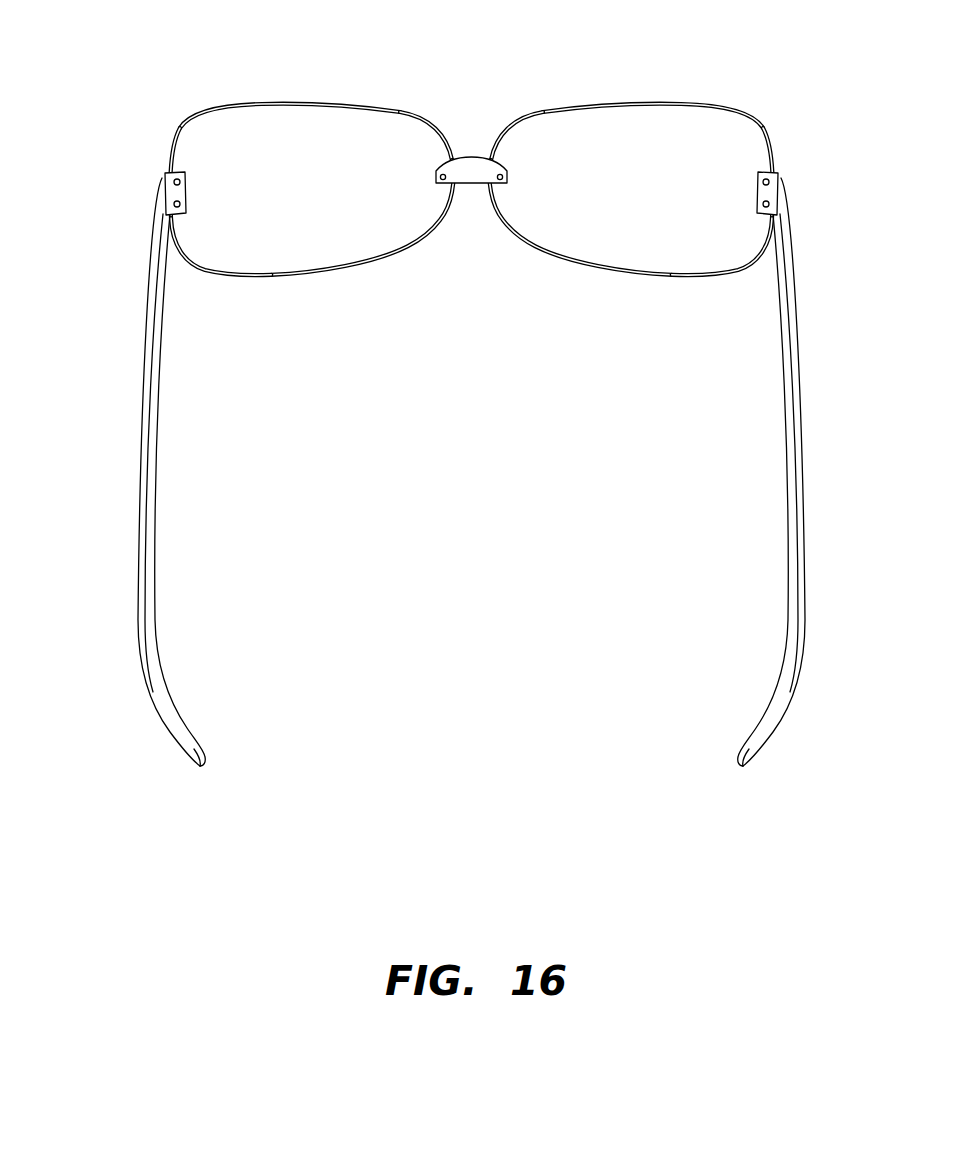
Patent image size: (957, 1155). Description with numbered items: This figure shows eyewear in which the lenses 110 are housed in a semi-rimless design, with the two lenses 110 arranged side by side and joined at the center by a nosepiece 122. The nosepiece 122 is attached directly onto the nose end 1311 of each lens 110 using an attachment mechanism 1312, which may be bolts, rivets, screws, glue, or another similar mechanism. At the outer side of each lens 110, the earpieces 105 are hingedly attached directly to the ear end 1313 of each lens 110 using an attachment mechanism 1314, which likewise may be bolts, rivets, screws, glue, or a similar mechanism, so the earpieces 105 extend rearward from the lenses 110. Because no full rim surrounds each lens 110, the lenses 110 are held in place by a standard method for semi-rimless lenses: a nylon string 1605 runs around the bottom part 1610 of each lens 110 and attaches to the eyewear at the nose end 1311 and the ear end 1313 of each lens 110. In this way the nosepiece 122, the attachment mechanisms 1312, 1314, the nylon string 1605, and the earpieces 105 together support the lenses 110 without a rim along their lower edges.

The earpiece 105 is at (153, 432).
The lens 110 is at (280, 137).
The nosepiece 122 is at (485, 174).
The nose end 1311 is at (430, 153).
The attachment mechanism 1312 is at (441, 177).
The ear end 1313 is at (185, 153).
The attachment mechanism 1314 is at (175, 178).
The nylon string 1605 is at (282, 274).
The bottom part 1610 is at (313, 263).